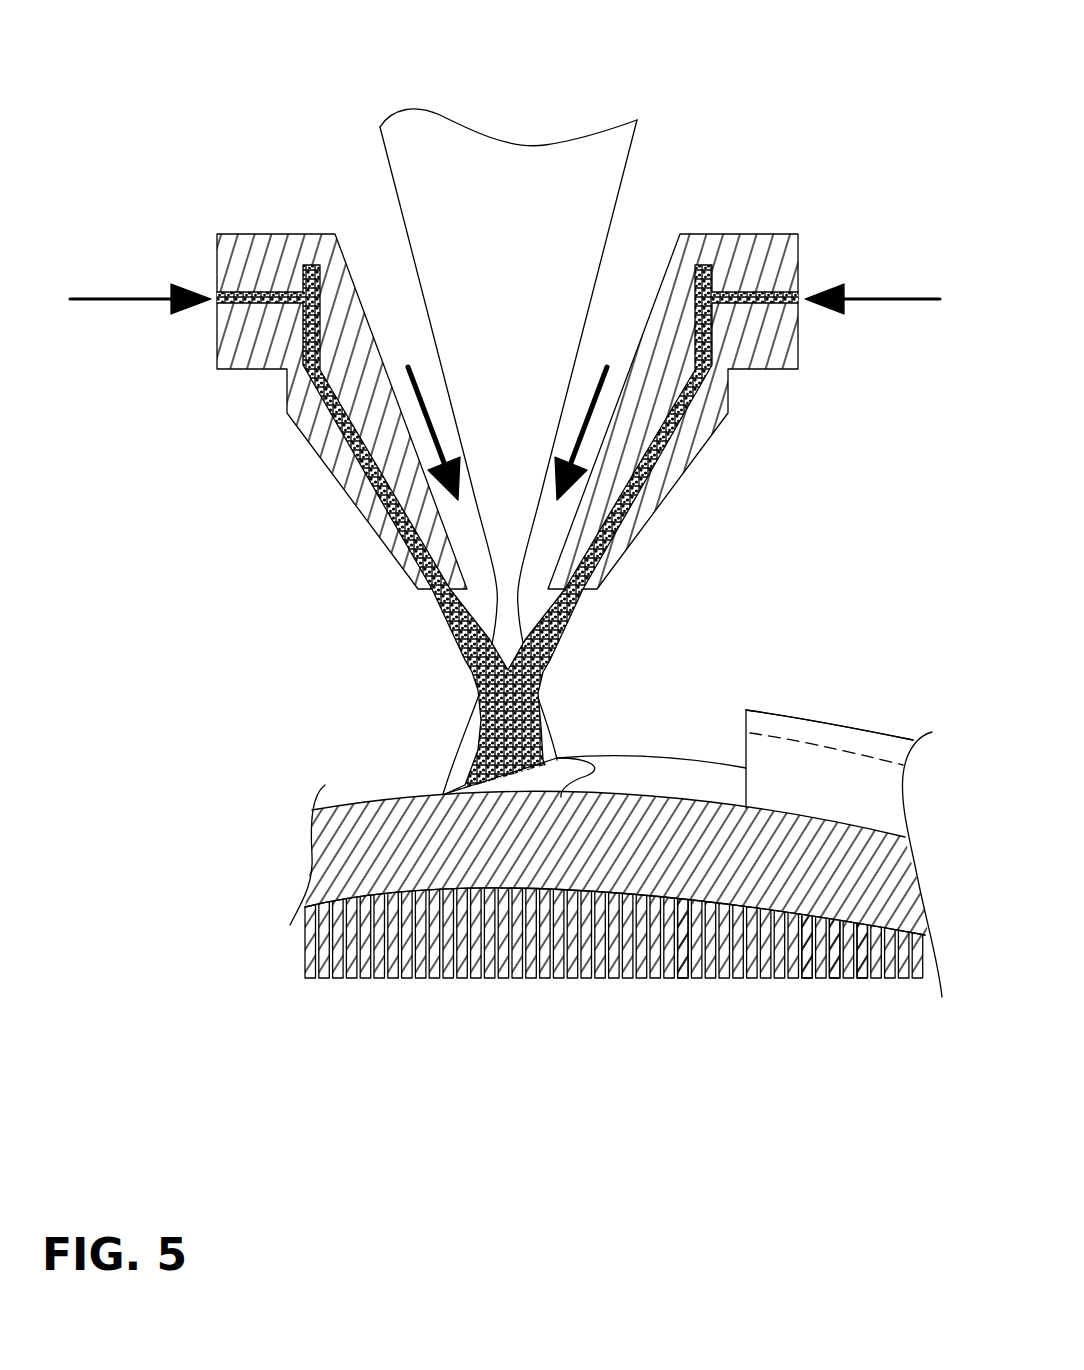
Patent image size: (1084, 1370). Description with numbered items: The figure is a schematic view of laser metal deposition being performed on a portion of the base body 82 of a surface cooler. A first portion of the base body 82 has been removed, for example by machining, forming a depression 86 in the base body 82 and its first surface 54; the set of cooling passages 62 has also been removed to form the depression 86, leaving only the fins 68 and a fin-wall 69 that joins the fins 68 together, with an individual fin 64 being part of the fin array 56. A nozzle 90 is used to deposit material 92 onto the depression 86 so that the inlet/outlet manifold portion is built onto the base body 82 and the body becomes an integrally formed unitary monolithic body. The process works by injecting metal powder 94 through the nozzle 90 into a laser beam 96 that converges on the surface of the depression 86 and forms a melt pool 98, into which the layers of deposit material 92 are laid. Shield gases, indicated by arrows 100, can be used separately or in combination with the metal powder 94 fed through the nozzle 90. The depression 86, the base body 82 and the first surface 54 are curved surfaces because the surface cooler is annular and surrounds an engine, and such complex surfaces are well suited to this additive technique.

The first surface 54 is at (778, 712).
The heat exchanger fin structure 56 is at (477, 992).
The set of cooling passages 62 is at (888, 750).
The fin 64 is at (684, 980).
The fins 68 is at (862, 980).
The fin-wall 69 is at (865, 872).
The base body 82 is at (838, 706).
The depression 86 is at (388, 802).
The nozzle 90 is at (632, 516).
The material 92 is at (648, 757).
The metal powder 94 is at (142, 290).
The laser beam 96 is at (525, 193).
The melt pool 98 is at (553, 780).
The arrows 100 is at (588, 432).